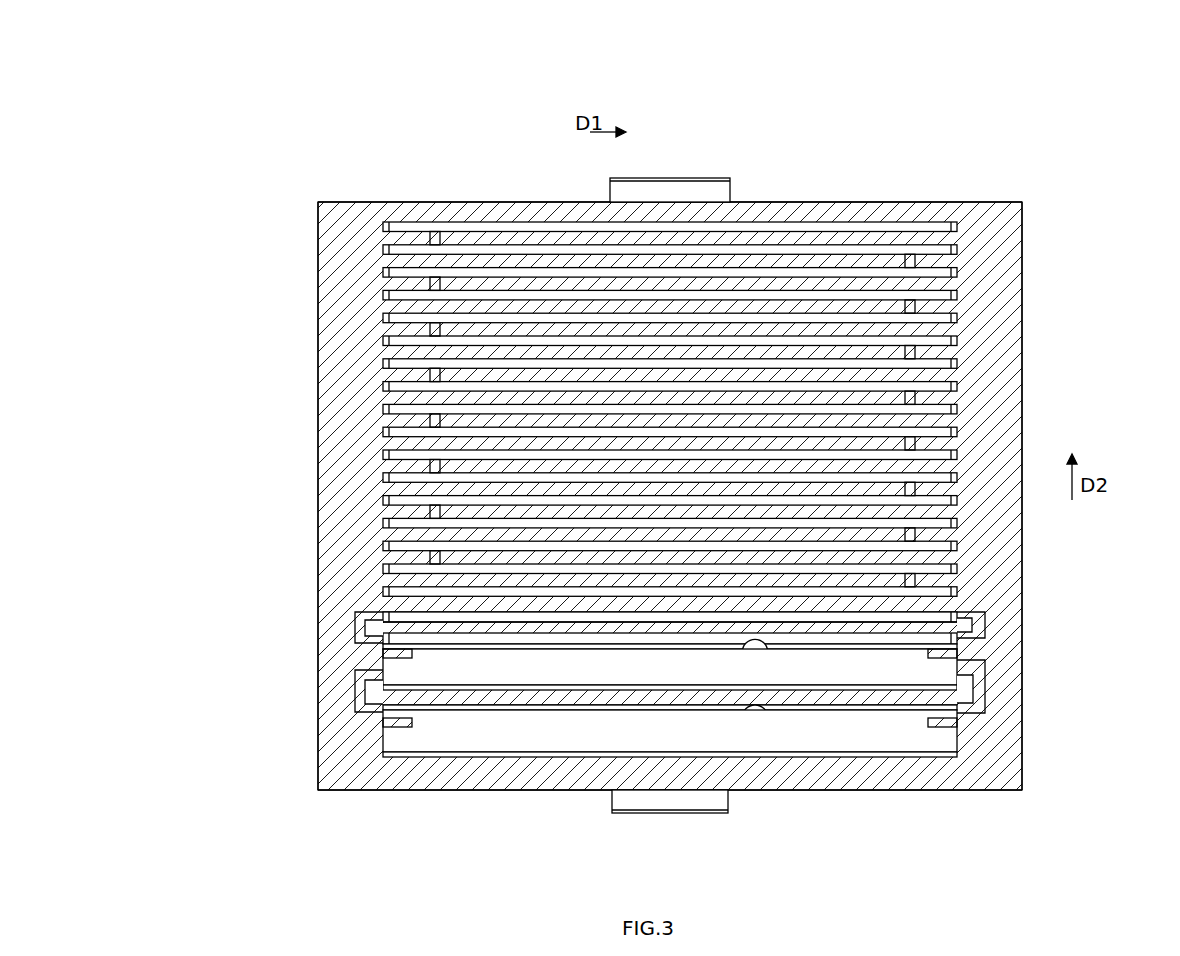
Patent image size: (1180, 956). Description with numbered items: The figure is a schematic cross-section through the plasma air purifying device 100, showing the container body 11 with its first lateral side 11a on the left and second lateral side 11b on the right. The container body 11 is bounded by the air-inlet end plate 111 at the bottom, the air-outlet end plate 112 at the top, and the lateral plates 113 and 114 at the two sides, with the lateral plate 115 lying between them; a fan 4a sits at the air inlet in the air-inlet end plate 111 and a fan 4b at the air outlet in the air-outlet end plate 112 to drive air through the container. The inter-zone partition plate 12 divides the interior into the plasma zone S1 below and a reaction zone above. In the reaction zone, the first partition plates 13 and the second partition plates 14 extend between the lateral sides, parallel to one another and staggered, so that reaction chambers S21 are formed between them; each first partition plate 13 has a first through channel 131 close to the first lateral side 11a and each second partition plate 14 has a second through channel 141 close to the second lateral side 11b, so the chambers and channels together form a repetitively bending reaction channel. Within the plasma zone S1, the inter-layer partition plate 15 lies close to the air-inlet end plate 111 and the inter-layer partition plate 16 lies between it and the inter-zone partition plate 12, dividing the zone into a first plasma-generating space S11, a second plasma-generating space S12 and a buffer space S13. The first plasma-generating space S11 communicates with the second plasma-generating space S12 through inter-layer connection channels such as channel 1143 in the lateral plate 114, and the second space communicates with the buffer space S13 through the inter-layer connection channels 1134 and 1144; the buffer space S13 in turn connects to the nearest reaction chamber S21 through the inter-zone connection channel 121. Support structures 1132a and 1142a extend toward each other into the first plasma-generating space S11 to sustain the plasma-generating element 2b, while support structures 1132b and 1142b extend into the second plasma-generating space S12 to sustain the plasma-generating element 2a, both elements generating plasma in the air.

The plasma air purifying device 100 is at (266, 106).
The container body 11 is at (345, 202).
The first lateral side 11a is at (282, 318).
The second lateral side 11b is at (1058, 318).
The air-inlet end plate 111 is at (753, 790).
The air-outlet end plate 112 is at (520, 202).
The lateral plate 113 is at (318, 385).
The lateral plate 114 is at (1022, 408).
The lateral plate 115 is at (948, 738).
The inter-zone partition plate 12 is at (398, 568).
The inter-zone connection channel 121 is at (670, 605).
The first partition plate 13 is at (848, 240).
The first through channel 131 is at (437, 238).
The second partition plate 14 is at (786, 262).
The second through channel 141 is at (910, 262).
The inter-layer partition plate 15 is at (795, 695).
The inter-layer partition plate 16 is at (962, 646).
The support structure 1132a is at (418, 732).
The support structure 1132b is at (412, 655).
The inter-layer connection channel 1134 is at (368, 614).
The support structure 1142a is at (938, 724).
The support structure 1142b is at (928, 655).
The inter-layer connection channel 1143 is at (983, 684).
The inter-layer connection channel 1144 is at (985, 630).
The plasma-generating element 2a is at (582, 647).
The plasma-generating element 2b is at (557, 718).
The fan 4a is at (640, 813).
The fan 4b is at (683, 178).
The plasma zone S1 is at (232, 630).
The first plasma-generating space S11 is at (392, 739).
The second plasma-generating space S12 is at (388, 665).
The buffer space S13 is at (385, 620).
The reaction chamber S21 is at (885, 592).